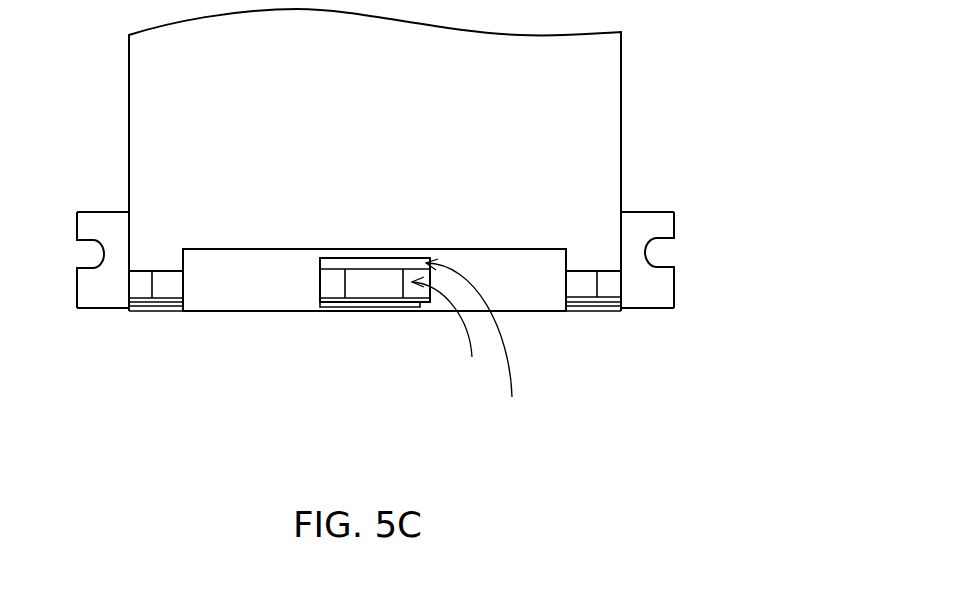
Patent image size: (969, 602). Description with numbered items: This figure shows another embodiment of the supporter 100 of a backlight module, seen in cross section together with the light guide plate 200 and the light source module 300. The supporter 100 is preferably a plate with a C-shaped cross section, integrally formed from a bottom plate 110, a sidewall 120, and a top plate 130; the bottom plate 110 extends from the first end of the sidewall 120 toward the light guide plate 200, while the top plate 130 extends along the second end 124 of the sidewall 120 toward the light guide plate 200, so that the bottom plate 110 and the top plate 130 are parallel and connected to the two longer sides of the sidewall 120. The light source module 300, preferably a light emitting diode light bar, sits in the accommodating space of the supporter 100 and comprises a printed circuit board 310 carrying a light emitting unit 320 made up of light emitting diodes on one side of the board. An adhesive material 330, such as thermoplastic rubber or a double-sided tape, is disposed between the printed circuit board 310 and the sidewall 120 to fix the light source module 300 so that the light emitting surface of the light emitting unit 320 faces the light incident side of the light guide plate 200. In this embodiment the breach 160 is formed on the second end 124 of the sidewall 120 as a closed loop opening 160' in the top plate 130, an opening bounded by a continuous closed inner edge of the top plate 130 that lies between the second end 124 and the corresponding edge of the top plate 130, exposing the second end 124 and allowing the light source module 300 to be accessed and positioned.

The supporter 100 is at (638, 210).
The bottom plate 110 is at (83, 288).
The sidewall 120 is at (605, 313).
The second end 124 is at (578, 310).
The top plate 130 is at (519, 305).
The light guide plate 200 is at (396, 142).
The light source module 300 is at (397, 370).
The printed circuit board 310 is at (423, 302).
The light emitting unit 320 is at (370, 287).
The adhesive material 330 is at (133, 312).
The breach 160 is at (452, 331).
The closed loop opening 160' is at (483, 343).